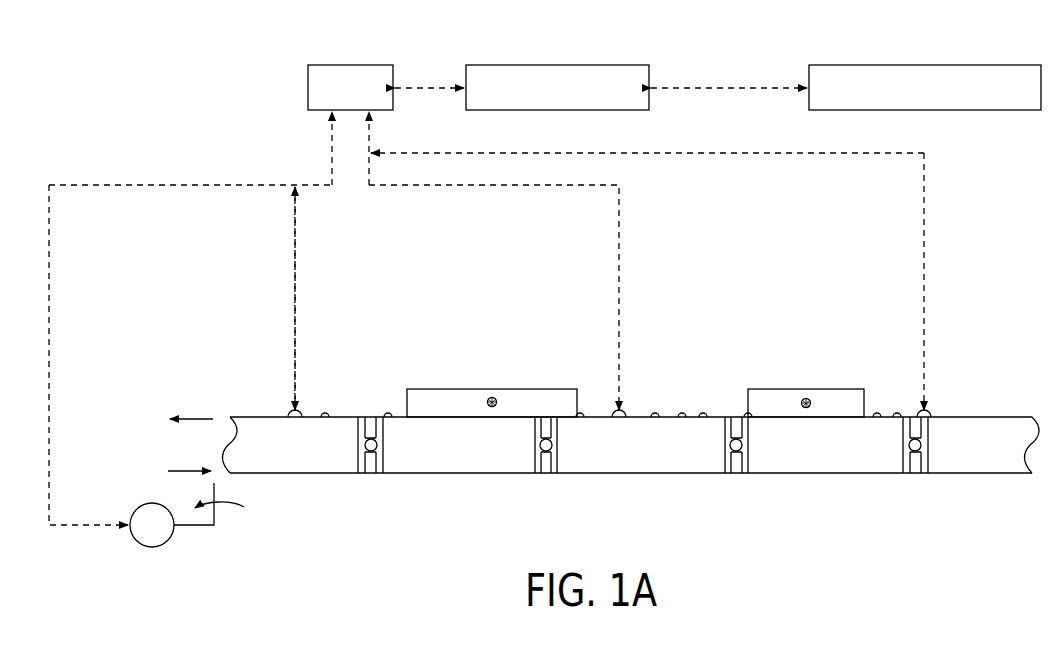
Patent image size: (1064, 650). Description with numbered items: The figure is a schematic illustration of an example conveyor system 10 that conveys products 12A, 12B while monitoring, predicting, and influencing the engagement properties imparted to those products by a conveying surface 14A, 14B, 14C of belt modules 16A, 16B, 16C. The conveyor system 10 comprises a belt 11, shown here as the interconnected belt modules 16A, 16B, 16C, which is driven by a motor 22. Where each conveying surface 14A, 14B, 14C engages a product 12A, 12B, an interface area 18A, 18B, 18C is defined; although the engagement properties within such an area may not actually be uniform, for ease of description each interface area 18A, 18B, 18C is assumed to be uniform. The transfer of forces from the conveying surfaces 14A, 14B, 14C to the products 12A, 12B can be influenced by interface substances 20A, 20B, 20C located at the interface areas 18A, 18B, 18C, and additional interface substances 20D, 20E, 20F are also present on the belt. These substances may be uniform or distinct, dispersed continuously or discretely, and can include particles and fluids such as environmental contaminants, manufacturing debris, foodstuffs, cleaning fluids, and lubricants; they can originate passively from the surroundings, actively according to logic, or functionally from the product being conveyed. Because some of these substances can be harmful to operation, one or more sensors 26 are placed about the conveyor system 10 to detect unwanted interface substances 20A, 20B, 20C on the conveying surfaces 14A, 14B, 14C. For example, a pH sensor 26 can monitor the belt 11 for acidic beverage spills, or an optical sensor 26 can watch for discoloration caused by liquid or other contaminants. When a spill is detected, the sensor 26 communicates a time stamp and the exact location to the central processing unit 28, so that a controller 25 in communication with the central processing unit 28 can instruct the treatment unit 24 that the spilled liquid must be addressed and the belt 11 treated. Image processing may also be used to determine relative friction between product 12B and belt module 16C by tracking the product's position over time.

The conveyor system 10 is at (218, 124).
The belt 11 is at (260, 416).
The product 12A is at (490, 388).
The product 12B is at (810, 388).
The conveying surface 14A is at (330, 413).
The conveying surface 14B is at (655, 416).
The conveying surface 14C is at (897, 416).
The belt module 16A is at (408, 474).
The belt module 16B is at (640, 458).
The belt module 16C is at (865, 465).
The interface area 18A is at (392, 412).
The interface area 18B is at (579, 412).
The interface area 18C is at (748, 412).
The interface substance 20A is at (485, 420).
The interface substance 20B is at (538, 420).
The interface substance 20C is at (808, 420).
The interface substance 20D is at (682, 415).
The interface substance 20E is at (705, 415).
The interface substance 20F is at (877, 413).
The motor 22 is at (150, 548).
The treatment unit 24 is at (925, 64).
The controller 25 is at (558, 64).
The sensor 26 is at (292, 410).
The central processing unit 28 is at (350, 64).